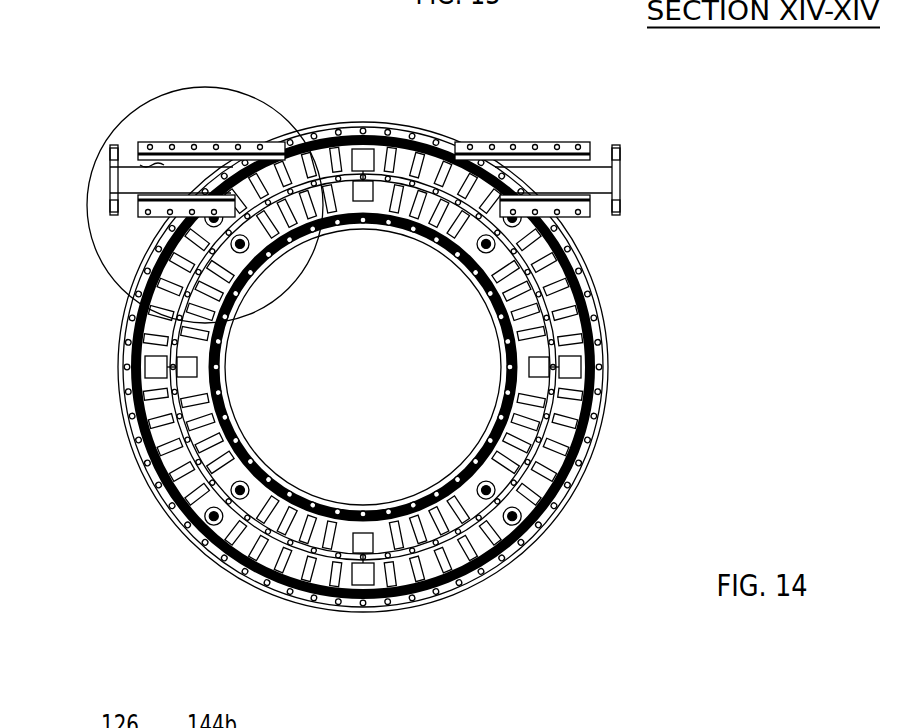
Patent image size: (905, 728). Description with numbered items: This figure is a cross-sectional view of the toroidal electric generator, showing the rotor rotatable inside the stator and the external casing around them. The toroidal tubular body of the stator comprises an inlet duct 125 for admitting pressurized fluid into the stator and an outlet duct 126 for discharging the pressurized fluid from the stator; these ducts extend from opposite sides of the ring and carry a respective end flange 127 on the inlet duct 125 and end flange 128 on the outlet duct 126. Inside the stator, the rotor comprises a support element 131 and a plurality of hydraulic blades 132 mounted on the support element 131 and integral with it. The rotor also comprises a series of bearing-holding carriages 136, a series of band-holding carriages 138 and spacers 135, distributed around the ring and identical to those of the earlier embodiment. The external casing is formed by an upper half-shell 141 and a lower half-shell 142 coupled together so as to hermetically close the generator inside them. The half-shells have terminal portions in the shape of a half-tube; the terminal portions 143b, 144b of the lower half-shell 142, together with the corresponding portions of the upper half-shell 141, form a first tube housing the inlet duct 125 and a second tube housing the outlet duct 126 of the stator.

The inlet duct 125 is at (598, 163).
The outlet duct 126 is at (133, 163).
The end flange 127 is at (622, 157).
The end flange 128 is at (110, 160).
The support element 131 is at (153, 485).
The hydraulic blades 132 is at (570, 480).
The spacers 135 is at (540, 256).
The bearing-holding carriages 136 is at (530, 533).
The band-holding carriages 138 is at (572, 357).
The upper half-shell 141 is at (363, 367).
The lower half-shell 142 is at (607, 317).
The terminal portion 143b is at (500, 142).
The terminal portion 144b is at (225, 143).